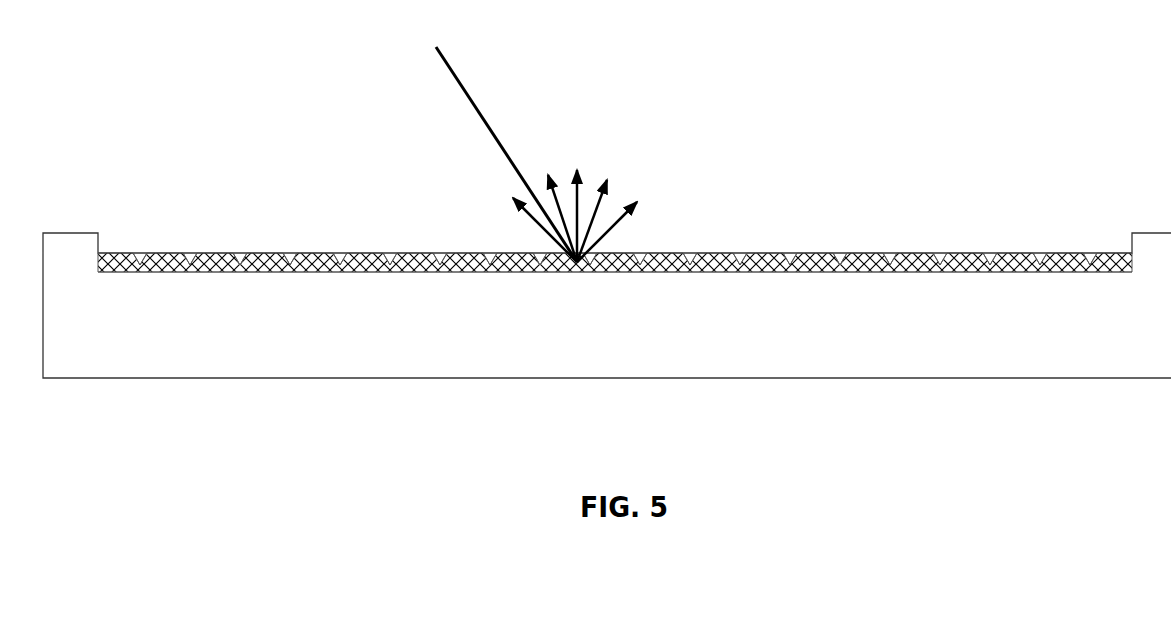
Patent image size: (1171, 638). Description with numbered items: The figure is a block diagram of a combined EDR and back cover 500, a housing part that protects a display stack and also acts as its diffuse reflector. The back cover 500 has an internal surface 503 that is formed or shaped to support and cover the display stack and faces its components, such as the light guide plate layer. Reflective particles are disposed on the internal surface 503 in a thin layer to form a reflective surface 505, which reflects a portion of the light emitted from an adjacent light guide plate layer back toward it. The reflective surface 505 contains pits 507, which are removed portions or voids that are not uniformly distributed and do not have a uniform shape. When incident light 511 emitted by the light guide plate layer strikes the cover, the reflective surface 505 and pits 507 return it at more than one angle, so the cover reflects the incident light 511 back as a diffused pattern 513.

The combined EDR and back cover 500 is at (607, 305).
The internal surface 503 is at (220, 268).
The reflective surface 505 is at (922, 252).
The pits 507 is at (395, 257).
The incident light 511 is at (498, 138).
The diffused pattern 513 is at (590, 227).